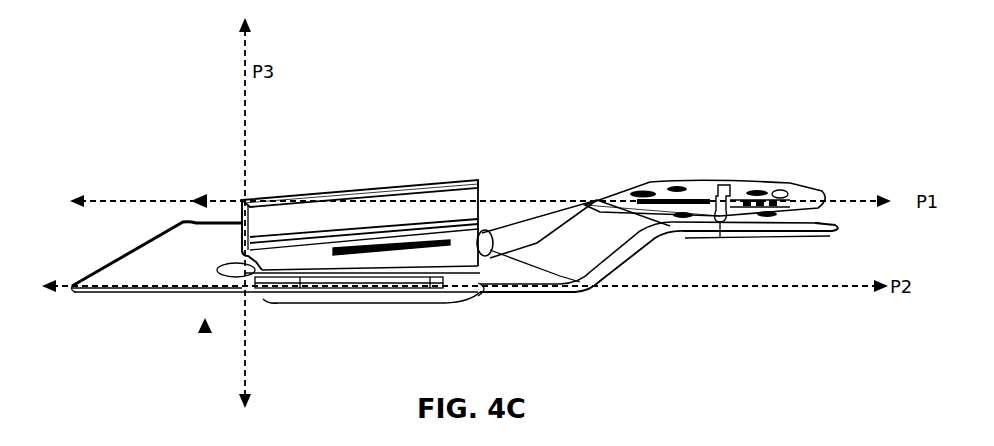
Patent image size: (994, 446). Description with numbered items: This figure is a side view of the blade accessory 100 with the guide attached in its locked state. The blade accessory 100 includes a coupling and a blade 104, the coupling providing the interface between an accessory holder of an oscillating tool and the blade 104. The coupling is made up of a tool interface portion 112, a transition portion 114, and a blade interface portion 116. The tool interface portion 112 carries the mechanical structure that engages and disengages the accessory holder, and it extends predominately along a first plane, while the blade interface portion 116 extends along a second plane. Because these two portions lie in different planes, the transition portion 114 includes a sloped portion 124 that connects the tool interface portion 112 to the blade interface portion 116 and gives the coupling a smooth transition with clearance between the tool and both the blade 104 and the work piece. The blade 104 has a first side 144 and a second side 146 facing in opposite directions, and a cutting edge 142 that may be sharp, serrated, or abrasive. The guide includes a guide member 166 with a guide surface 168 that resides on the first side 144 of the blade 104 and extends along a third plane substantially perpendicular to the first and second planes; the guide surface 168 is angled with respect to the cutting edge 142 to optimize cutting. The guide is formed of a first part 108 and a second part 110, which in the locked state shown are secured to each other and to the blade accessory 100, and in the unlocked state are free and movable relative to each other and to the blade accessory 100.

The blade accessory 100 is at (846, 78).
The blade 104 is at (328, 279).
The first part 108 is at (386, 262).
The second part 110 is at (308, 299).
The tool interface portion 112 is at (718, 158).
The transition portion 114 is at (570, 215).
The blade interface portion 116 is at (338, 290).
The sloped portion 124 is at (668, 226).
The cutting edge 142 is at (108, 264).
The first side 144 is at (203, 192).
The second side 146 is at (205, 332).
The guide member 166 is at (480, 180).
The guide surface 168 is at (232, 233).